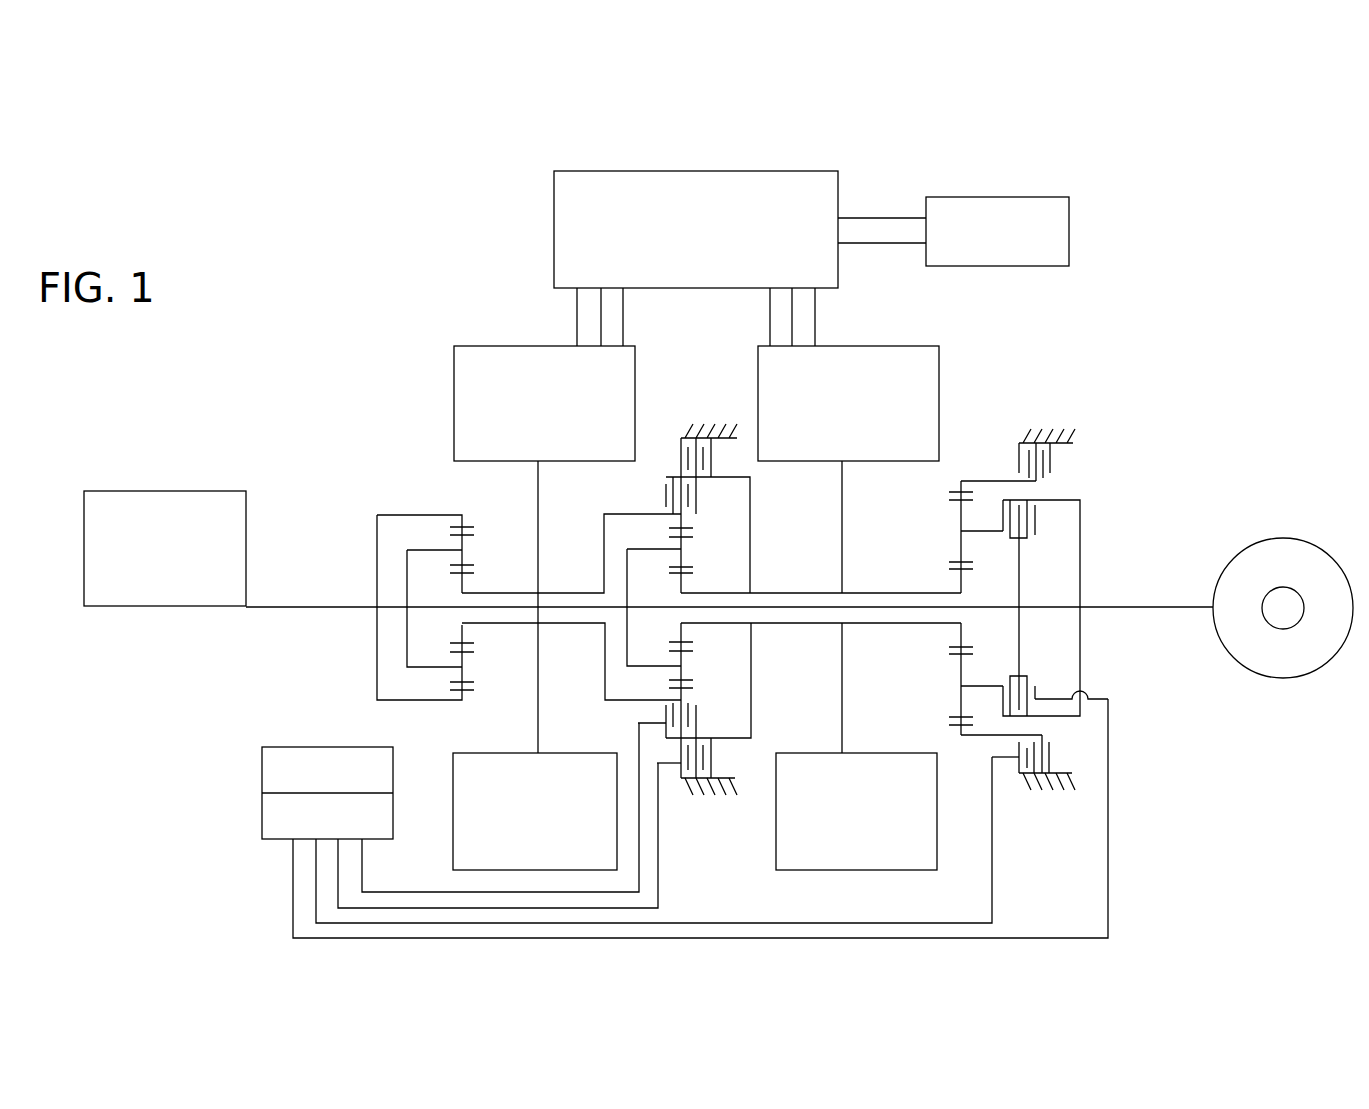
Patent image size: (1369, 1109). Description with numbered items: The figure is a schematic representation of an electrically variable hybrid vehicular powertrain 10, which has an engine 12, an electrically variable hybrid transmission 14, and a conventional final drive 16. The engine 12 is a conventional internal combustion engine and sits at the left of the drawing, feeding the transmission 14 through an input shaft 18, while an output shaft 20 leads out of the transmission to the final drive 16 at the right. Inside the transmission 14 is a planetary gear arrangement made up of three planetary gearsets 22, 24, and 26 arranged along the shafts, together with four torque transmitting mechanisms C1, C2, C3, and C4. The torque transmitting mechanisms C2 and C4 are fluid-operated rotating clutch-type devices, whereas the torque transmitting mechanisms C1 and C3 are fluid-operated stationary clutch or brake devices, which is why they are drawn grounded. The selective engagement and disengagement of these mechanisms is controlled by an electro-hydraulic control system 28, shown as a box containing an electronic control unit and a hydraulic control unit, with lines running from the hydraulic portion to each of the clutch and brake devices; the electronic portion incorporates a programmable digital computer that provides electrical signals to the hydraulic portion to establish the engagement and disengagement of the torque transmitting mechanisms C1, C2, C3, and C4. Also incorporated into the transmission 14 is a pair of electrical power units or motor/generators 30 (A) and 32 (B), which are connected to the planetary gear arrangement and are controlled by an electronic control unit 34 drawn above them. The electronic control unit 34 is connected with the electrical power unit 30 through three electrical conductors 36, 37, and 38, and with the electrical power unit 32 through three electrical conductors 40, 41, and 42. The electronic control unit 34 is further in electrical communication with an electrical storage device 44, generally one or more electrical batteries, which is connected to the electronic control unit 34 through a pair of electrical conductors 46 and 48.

The powertrain 10 is at (460, 172).
The engine 12 is at (170, 491).
The electrically variable hybrid transmission 14 is at (348, 249).
The final drive 16 is at (1283, 538).
The input shaft 18 is at (345, 608).
The output shaft 20 is at (1125, 610).
The planetary gearset 22 is at (418, 726).
The planetary gearset 24 is at (621, 717).
The planetary gearset 26 is at (946, 733).
The electro-hydraulic control system 28 is at (230, 757).
The motor/generator 30 is at (454, 380).
The motor/generator 32 is at (939, 402).
The electronic control unit 34 is at (660, 171).
The electrical conductor 36 is at (577, 315).
The electrical conductor 37 is at (601, 320).
The electrical conductor 38 is at (623, 313).
The electrical conductor 40 is at (770, 315).
The electrical conductor 41 is at (792, 320).
The electrical conductor 42 is at (815, 315).
The electrical storage device 44 is at (1069, 232).
The electrical conductor 46 is at (875, 218).
The electrical conductor 48 is at (913, 243).
The torque transmitting mechanism C1 is at (1053, 455).
The torque transmitting mechanism C2 is at (1055, 608).
The torque transmitting mechanism C3 is at (715, 450).
The torque transmitting mechanism C4 is at (701, 498).